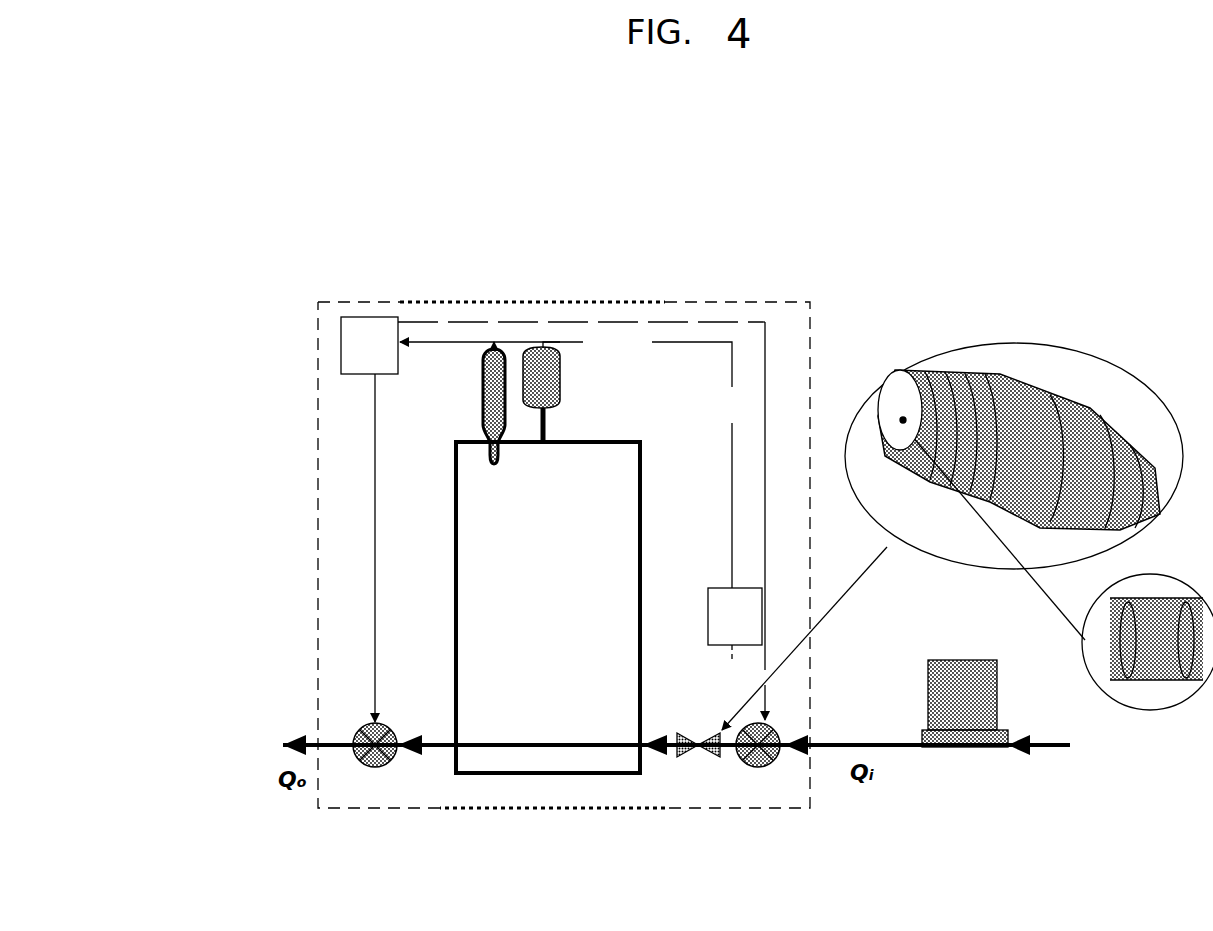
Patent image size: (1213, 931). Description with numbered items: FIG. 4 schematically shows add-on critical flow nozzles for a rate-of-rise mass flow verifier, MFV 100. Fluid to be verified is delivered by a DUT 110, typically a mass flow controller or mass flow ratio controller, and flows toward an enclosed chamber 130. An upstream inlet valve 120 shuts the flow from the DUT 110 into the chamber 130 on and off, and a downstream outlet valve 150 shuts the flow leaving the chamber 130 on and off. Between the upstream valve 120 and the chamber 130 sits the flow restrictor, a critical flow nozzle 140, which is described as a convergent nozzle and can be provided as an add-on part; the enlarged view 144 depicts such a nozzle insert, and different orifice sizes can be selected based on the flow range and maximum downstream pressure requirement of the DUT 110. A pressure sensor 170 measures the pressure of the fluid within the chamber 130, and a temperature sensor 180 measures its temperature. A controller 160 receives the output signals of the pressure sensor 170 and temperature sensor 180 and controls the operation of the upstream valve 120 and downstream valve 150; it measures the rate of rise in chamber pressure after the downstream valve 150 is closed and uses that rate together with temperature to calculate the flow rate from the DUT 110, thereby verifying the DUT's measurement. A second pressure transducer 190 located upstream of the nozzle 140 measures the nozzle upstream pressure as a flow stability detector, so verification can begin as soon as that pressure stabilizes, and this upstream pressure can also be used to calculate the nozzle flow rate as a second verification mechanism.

The mass flow verifier 100 is at (500, 812).
The DUT 110 is at (968, 748).
The upstream inlet valve 120 is at (763, 800).
The chamber 130 is at (614, 441).
The critical flow nozzle 140 is at (702, 762).
The critical flow nozzle insert (enlarged view) 144 is at (1038, 352).
The downstream outlet valve 150 is at (360, 757).
The controller 160 is at (553, 519).
The pressure sensor 170 is at (542, 348).
The temperature sensor 180 is at (486, 349).
The second pressure transducer 190 is at (735, 625).